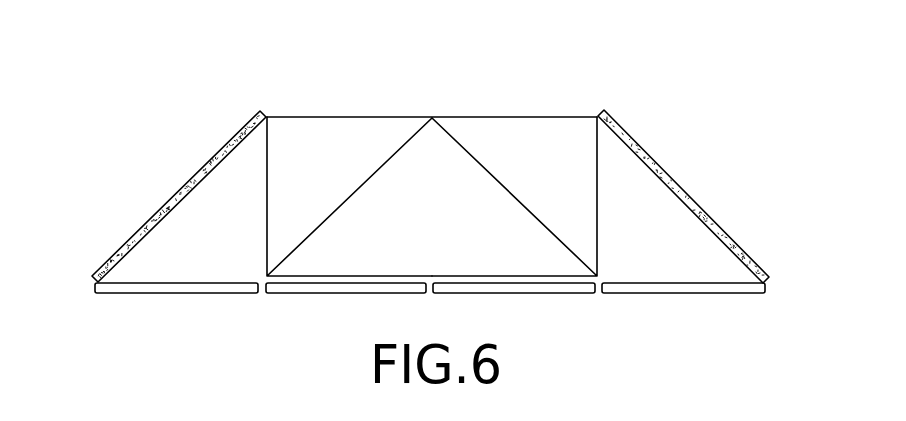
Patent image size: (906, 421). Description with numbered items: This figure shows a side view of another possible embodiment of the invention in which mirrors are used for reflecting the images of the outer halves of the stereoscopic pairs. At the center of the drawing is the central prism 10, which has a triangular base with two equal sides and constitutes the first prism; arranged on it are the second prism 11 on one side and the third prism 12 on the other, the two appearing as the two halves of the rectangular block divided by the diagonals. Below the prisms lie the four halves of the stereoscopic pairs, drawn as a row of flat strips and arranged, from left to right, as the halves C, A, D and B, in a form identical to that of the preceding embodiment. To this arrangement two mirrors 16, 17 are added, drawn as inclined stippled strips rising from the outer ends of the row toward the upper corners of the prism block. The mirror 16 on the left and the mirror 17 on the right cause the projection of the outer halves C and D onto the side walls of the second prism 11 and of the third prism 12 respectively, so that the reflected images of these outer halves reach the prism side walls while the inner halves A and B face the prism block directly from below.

The central prism 10 is at (432, 148).
The second prism 11 is at (332, 150).
The third prism 12 is at (517, 153).
The mirror 16 is at (197, 170).
The mirror 17 is at (672, 180).
The half A is at (355, 287).
The half B is at (672, 288).
The half C is at (188, 290).
The half D is at (523, 287).